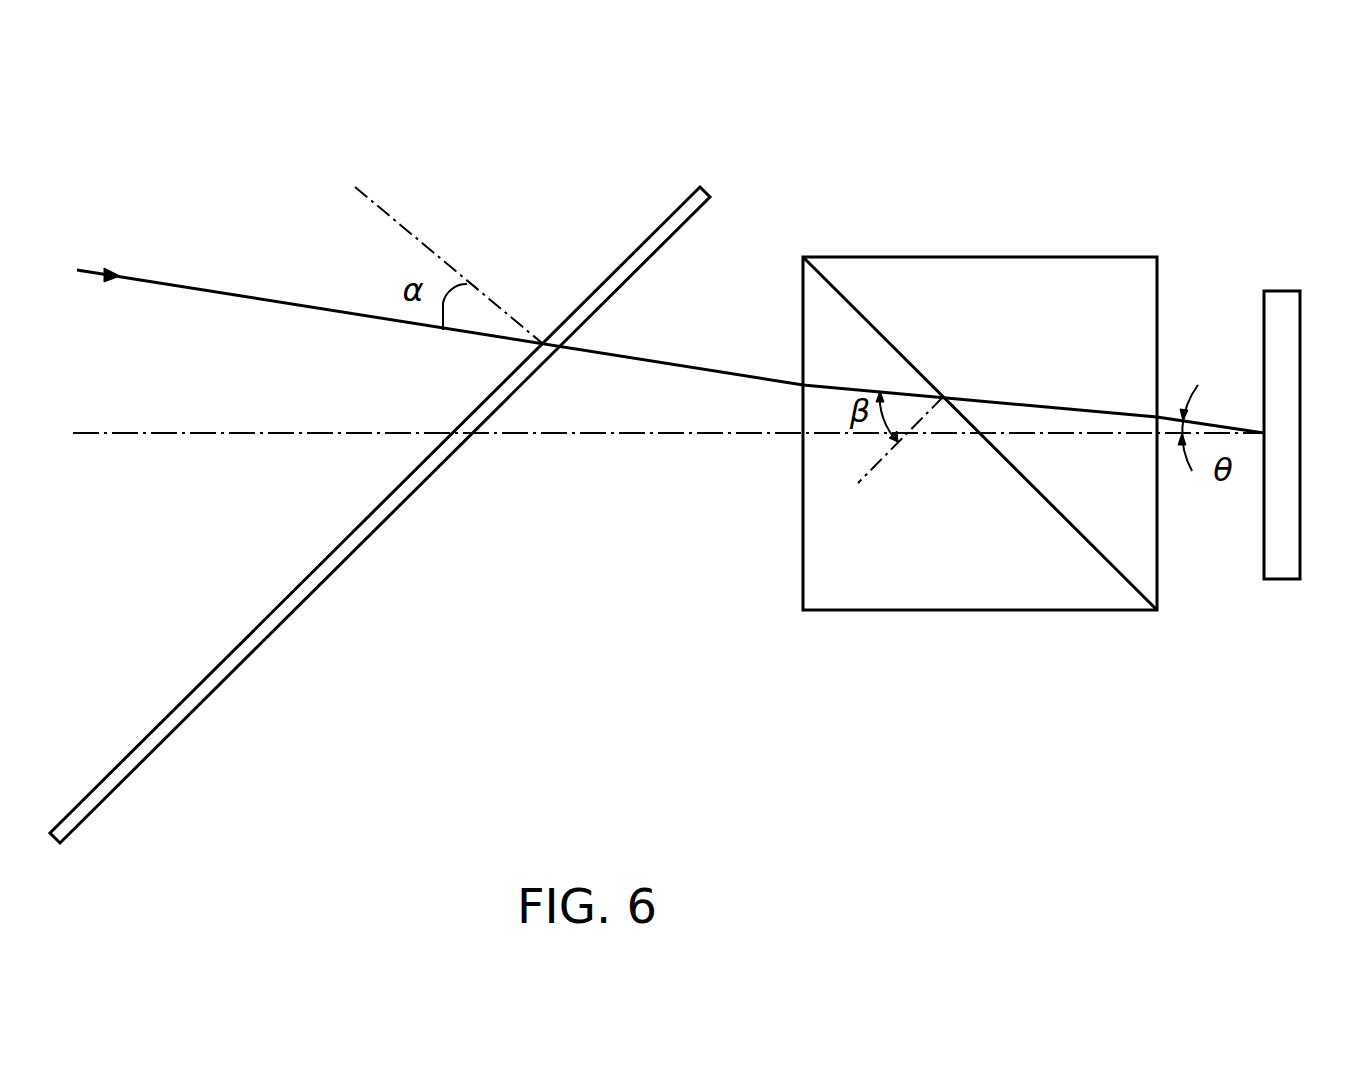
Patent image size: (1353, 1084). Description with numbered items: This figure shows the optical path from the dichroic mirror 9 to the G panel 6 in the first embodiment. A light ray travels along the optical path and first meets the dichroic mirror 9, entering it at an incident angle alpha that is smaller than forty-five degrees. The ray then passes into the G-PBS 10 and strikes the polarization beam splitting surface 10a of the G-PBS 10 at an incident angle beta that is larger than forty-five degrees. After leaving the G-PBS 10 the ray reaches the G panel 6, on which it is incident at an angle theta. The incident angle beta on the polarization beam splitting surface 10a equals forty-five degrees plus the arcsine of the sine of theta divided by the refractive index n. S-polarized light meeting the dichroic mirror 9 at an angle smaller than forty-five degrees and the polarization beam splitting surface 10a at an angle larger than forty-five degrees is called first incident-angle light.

The dichroic mirror 9 is at (633, 250).
The G-PBS 10 is at (1053, 282).
The polarization beam splitting surface 10a is at (1128, 572).
The G panel 6 is at (1277, 299).